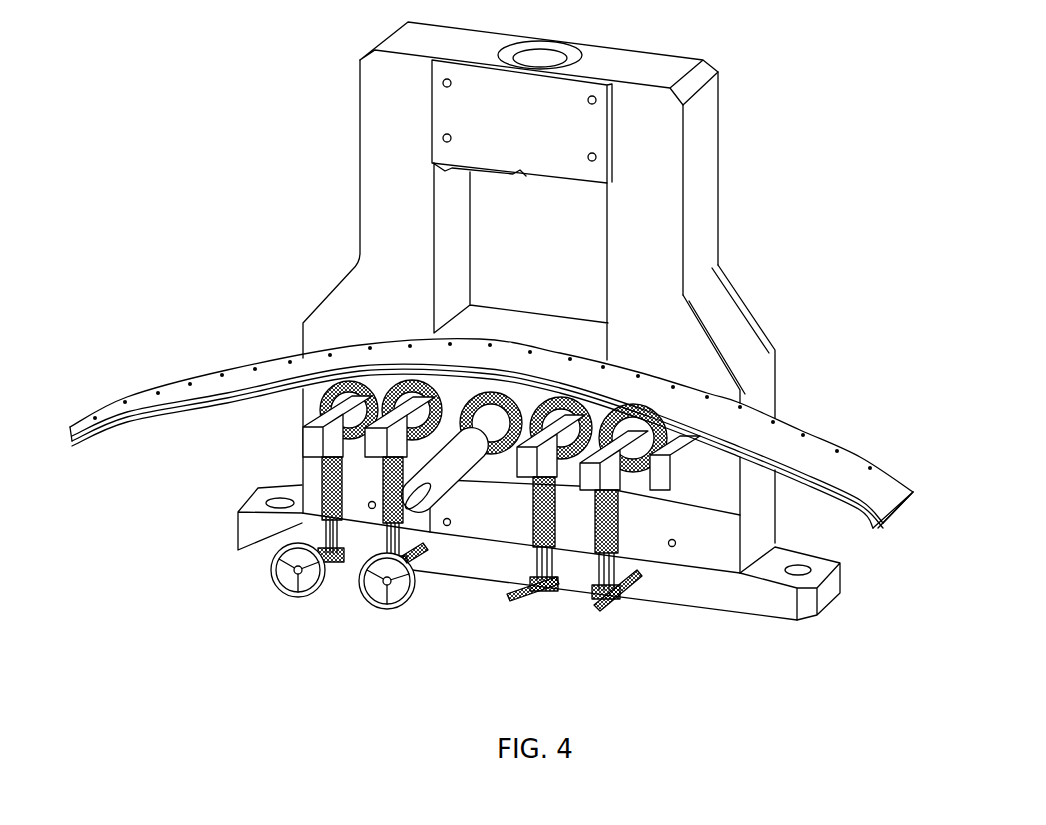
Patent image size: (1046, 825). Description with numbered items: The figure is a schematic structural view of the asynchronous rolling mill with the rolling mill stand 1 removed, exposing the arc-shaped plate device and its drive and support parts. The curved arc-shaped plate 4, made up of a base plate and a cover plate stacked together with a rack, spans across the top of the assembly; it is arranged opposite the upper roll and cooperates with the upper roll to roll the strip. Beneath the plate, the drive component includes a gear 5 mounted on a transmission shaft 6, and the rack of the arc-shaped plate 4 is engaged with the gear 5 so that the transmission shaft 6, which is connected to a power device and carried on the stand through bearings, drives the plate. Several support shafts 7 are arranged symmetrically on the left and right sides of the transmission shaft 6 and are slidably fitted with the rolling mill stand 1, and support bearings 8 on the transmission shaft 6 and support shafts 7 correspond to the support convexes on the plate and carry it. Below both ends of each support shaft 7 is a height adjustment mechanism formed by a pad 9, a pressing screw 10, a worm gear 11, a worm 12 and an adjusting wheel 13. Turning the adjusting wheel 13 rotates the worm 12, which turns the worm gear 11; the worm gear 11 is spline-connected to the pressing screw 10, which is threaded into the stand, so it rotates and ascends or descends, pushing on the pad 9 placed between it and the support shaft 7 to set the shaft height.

The rolling mill stand 1 is at (305, 472).
The arc-shaped plate 4 is at (585, 378).
The gear 5 is at (515, 383).
The transmission shaft 6 is at (385, 402).
The support shaft 7 is at (615, 398).
The support bearing 8 is at (413, 368).
The pad 9 is at (740, 518).
The pressing screw 10 is at (328, 522).
The worm gear 11 is at (558, 588).
The worm 12 is at (615, 597).
The adjusting wheel 13 is at (275, 586).